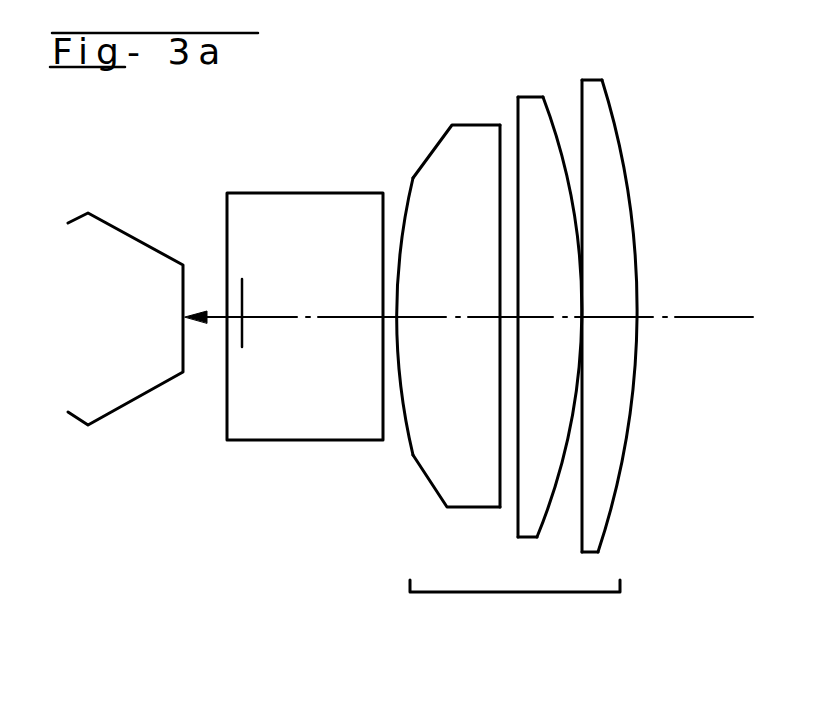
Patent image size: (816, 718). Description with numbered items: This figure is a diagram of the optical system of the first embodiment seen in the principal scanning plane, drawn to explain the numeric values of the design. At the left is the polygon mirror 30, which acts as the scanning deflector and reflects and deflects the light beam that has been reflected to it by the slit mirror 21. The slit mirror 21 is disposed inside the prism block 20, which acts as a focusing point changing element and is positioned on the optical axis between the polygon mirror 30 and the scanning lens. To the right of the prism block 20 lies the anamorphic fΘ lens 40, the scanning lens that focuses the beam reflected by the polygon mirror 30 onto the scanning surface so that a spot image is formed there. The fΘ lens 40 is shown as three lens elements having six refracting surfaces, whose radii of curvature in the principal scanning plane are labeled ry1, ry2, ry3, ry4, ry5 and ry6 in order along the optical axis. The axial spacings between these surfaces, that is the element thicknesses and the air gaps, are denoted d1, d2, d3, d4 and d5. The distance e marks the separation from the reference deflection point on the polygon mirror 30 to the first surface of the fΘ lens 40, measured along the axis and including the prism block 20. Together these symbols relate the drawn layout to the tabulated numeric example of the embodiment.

The polygon mirror 30 is at (115, 390).
The slit mirror 21 is at (236, 338).
The prism block 20 is at (337, 403).
The distance from the reference deflection point to the first surface of the fΘ lens e is at (280, 317).
The radius of curvature of the first surface in the principal scanning plane ry1 is at (415, 207).
The radius of curvature of the second surface in the principal scanning plane ry2 is at (503, 140).
The radius of curvature of the third surface in the principal scanning plane ry3 is at (517, 110).
The radius of curvature of the fourth surface in the principal scanning plane ry4 is at (550, 118).
The radius of curvature of the fifth surface in the principal scanning plane ry5 is at (582, 107).
The radius of curvature of the sixth surface in the principal scanning plane ry6 is at (618, 130).
The axial distance d1 is at (443, 318).
The axial distance d2 is at (512, 322).
The axial distance d3 is at (550, 320).
The axial distance d4 is at (583, 323).
The axial distance d5 is at (620, 317).
The anamorphic fΘ lens 40 is at (543, 592).